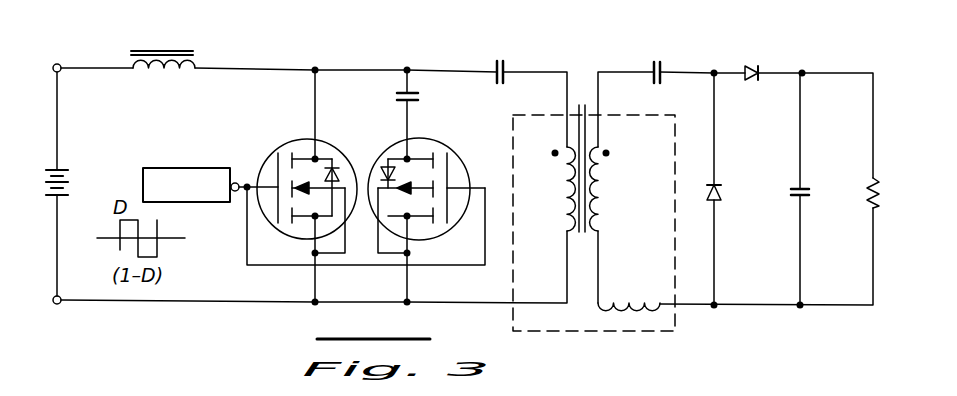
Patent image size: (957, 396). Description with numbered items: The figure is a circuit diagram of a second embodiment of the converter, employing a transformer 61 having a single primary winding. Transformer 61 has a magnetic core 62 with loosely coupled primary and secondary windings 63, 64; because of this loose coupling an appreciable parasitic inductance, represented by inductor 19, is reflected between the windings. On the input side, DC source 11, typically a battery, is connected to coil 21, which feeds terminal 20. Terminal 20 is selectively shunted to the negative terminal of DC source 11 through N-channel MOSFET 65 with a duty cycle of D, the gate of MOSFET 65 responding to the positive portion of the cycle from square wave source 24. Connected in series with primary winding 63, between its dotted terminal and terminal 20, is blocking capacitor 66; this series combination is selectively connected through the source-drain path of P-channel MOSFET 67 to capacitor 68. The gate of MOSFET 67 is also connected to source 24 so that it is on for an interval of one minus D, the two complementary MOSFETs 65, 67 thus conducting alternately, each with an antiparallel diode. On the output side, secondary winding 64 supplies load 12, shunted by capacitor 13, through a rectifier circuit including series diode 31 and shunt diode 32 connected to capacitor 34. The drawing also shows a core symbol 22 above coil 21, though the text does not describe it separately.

The DC source 11 is at (71, 178).
The load 12 is at (884, 189).
The capacitor 13 is at (792, 199).
The inductor 19 is at (628, 302).
The terminal 20 is at (317, 68).
The coil 21 is at (173, 69).
The inductor core 22 is at (133, 50).
The square wave source 24 is at (168, 168).
The series diode 31 is at (752, 80).
The shunt diode 32 is at (709, 203).
The capacitor 34 is at (666, 80).
The transformer 61 is at (594, 209).
The magnetic core 62 is at (581, 159).
The primary winding 63 is at (566, 210).
The secondary winding 64 is at (598, 205).
The N-channel MOSFET 65 is at (290, 200).
The blocking capacitor 66 is at (500, 84).
The P-channel MOSFET 67 is at (410, 202).
The capacitor 68 is at (397, 96).